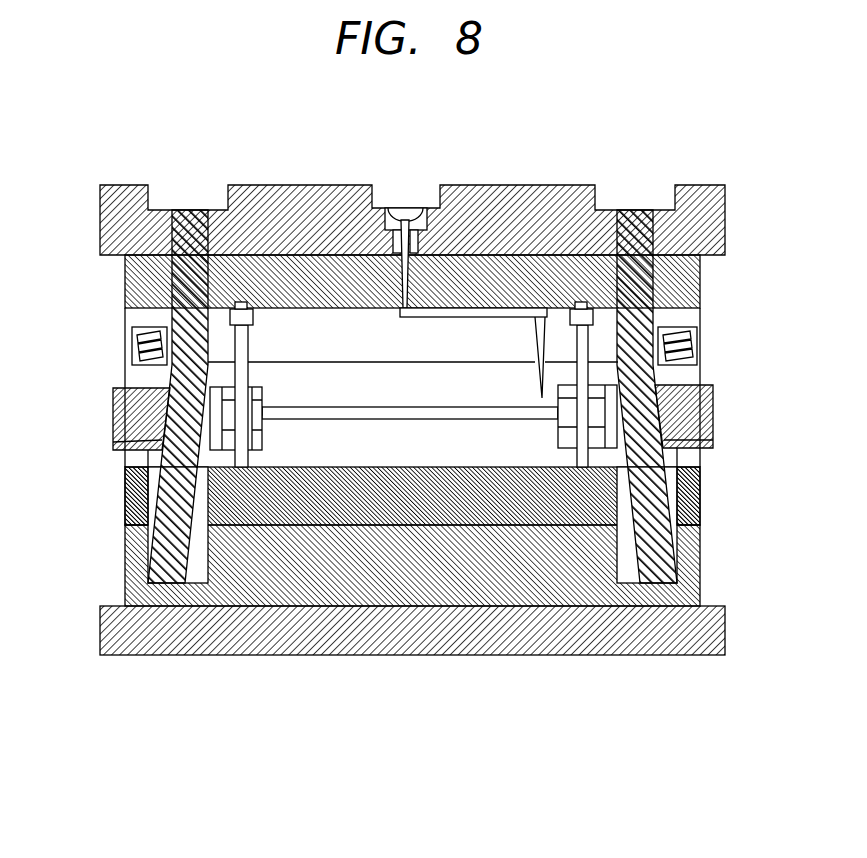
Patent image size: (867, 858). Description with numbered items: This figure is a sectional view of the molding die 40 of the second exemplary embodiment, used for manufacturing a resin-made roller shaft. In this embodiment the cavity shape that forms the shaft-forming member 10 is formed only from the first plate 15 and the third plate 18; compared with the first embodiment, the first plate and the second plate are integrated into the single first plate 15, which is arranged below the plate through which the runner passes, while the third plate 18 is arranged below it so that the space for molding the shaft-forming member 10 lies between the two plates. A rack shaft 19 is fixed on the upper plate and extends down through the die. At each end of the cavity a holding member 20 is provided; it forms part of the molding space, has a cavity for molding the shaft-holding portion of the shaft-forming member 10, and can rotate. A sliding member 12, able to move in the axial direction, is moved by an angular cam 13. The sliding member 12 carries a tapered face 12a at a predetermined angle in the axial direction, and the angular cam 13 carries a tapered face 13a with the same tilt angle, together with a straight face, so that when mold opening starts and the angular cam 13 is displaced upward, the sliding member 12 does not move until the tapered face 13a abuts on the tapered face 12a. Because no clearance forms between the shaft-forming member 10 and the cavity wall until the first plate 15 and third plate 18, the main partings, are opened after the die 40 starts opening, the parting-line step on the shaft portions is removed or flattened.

The molding die 40 is at (694, 128).
The shaft-forming member 10 is at (463, 412).
The sliding member 12 is at (127, 398).
The tapered face 12a is at (120, 441).
The angular cam 13 is at (628, 378).
The tapered face 13a is at (163, 505).
The first plate 15 is at (348, 375).
The third plate 18 is at (417, 453).
The rack shaft 19 is at (238, 302).
The holding member 20 is at (258, 440).